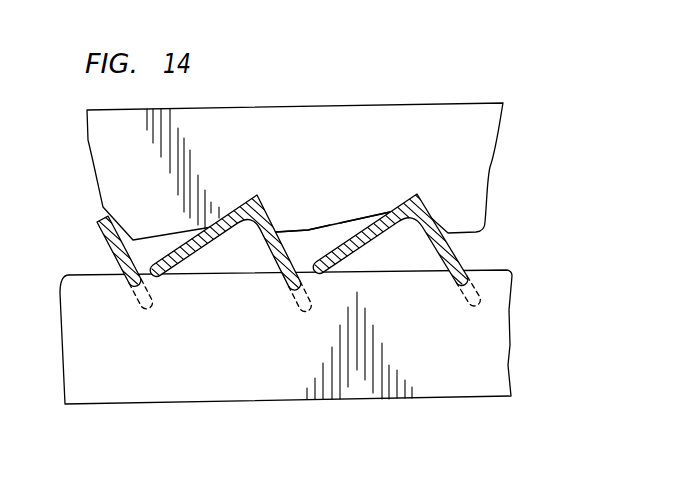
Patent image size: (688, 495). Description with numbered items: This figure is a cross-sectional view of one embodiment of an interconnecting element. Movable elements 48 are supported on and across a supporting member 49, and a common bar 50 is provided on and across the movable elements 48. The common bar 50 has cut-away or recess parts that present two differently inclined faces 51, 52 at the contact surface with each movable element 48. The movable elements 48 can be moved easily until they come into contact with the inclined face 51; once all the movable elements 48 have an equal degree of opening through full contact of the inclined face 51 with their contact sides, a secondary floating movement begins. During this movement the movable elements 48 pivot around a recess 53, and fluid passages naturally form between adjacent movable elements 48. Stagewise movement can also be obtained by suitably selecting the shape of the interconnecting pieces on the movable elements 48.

The movable element 48 is at (445, 245).
The supporting member 49 is at (500, 345).
The common bar 50 is at (343, 110).
The inclined face 51 is at (379, 216).
The inclined face 52 is at (311, 229).
The recess 53 is at (457, 285).